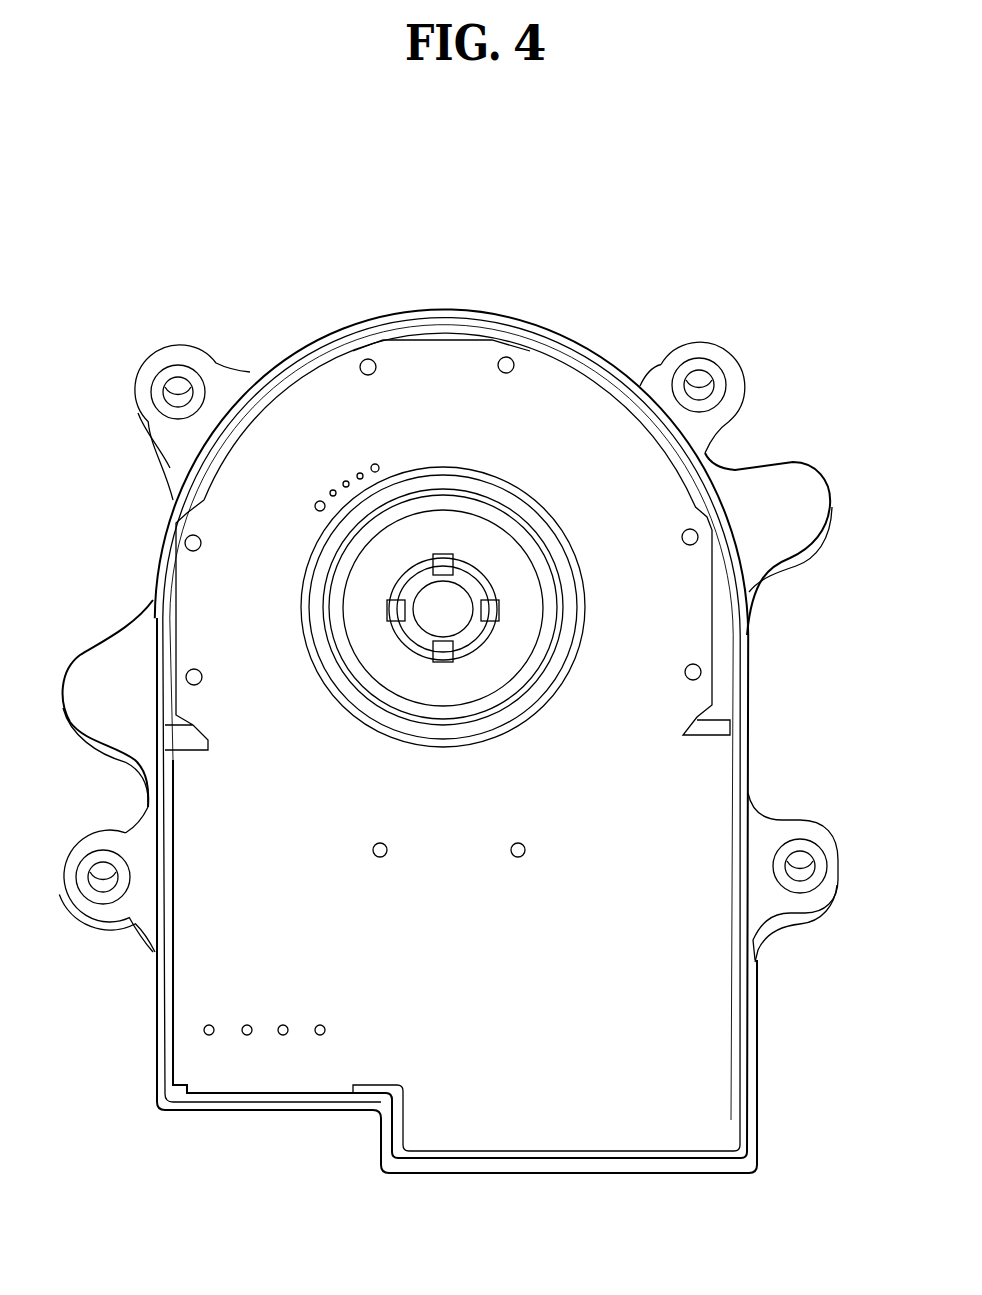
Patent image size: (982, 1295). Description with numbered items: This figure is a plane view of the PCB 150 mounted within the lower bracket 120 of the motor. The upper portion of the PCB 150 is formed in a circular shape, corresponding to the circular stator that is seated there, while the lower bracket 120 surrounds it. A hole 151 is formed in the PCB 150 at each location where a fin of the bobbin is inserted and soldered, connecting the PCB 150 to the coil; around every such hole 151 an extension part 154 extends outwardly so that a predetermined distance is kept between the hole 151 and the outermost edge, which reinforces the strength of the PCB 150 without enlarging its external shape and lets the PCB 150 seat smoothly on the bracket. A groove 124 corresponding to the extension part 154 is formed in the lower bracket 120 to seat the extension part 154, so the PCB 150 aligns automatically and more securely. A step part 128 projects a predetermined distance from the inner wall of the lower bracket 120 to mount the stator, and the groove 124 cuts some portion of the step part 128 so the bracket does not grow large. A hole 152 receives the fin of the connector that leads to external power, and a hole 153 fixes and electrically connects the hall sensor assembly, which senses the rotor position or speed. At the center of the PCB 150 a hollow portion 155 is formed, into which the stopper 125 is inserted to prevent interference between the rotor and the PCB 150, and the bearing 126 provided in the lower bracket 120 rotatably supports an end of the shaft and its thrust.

The lower bracket 120 is at (783, 483).
The groove 124 is at (357, 332).
The stopper 125 is at (543, 532).
The bearing 126 is at (472, 588).
The step part 128 is at (633, 407).
The PCB 150 is at (717, 1065).
The hole 151 is at (201, 683).
The hole 152 is at (323, 1027).
The hole 153 is at (378, 463).
The extension part 154 is at (507, 357).
The hollow portion 155 is at (513, 717).